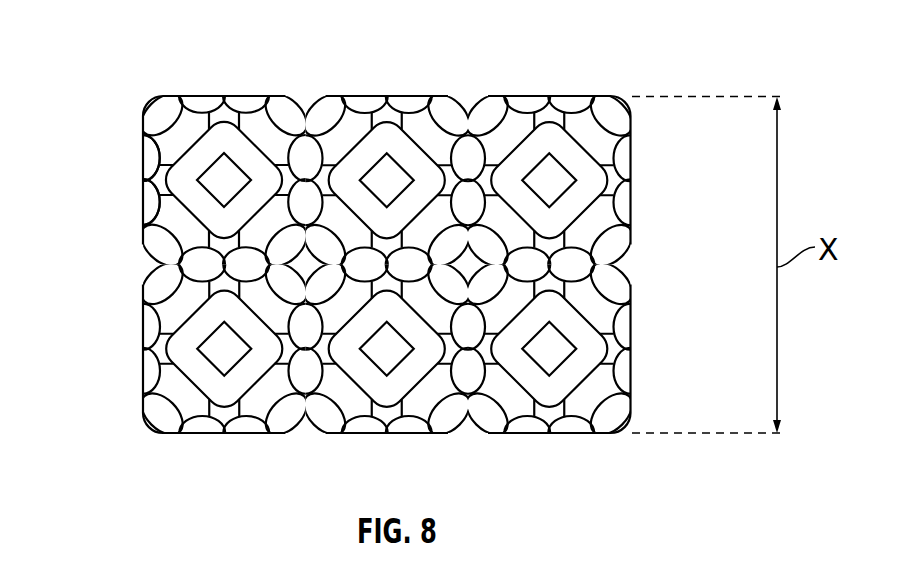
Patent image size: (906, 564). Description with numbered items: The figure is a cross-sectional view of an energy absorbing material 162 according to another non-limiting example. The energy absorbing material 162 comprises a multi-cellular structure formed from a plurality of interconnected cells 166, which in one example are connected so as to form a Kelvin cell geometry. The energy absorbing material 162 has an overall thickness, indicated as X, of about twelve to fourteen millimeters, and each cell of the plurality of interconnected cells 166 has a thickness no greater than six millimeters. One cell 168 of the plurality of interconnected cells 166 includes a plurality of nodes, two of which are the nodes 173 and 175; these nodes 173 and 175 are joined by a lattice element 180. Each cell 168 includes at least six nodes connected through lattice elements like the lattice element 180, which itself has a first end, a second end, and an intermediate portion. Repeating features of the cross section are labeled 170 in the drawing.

The energy absorbing material 162 is at (138, 30).
The plurality of interconnected cells 166 is at (128, 323).
The cell 168 is at (220, 177).
The pattern tile 170 is at (202, 97).
The node 173 is at (150, 207).
The node 175 is at (228, 143).
The lattice element 180 is at (168, 183).